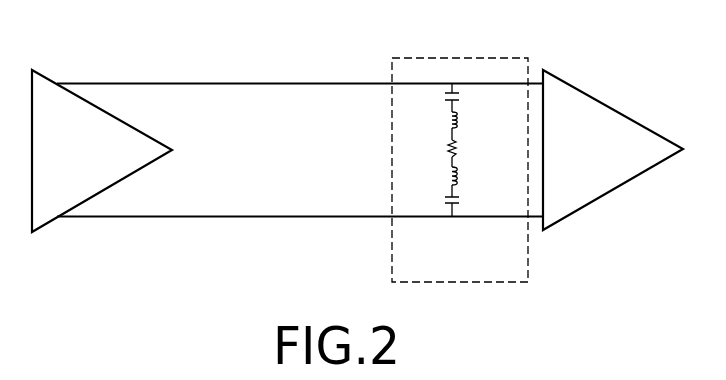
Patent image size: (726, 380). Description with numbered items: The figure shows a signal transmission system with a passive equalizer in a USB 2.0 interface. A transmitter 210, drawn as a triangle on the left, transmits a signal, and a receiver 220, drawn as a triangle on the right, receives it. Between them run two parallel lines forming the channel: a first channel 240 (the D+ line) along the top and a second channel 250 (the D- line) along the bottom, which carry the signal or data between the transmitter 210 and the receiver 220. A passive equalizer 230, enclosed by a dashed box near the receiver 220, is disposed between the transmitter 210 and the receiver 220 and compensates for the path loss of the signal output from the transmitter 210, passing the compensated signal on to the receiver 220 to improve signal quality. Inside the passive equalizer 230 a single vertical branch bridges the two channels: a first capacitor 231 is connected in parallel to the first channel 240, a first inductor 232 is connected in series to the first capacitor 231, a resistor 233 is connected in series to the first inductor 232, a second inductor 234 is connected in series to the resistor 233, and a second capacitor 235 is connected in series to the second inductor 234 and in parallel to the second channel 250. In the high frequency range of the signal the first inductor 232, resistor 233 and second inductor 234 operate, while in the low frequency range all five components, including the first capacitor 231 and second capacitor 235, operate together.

The transmitter 210 is at (32, 70).
The receiver 220 is at (617, 107).
The passive equalizer 230 is at (462, 58).
The first capacitor 231 is at (461, 97).
The first inductor 232 is at (459, 119).
The resistor 233 is at (459, 148).
The second inductor 234 is at (459, 174).
The second capacitor 235 is at (461, 202).
The first channel 240 is at (261, 83).
The second channel 250 is at (261, 216).